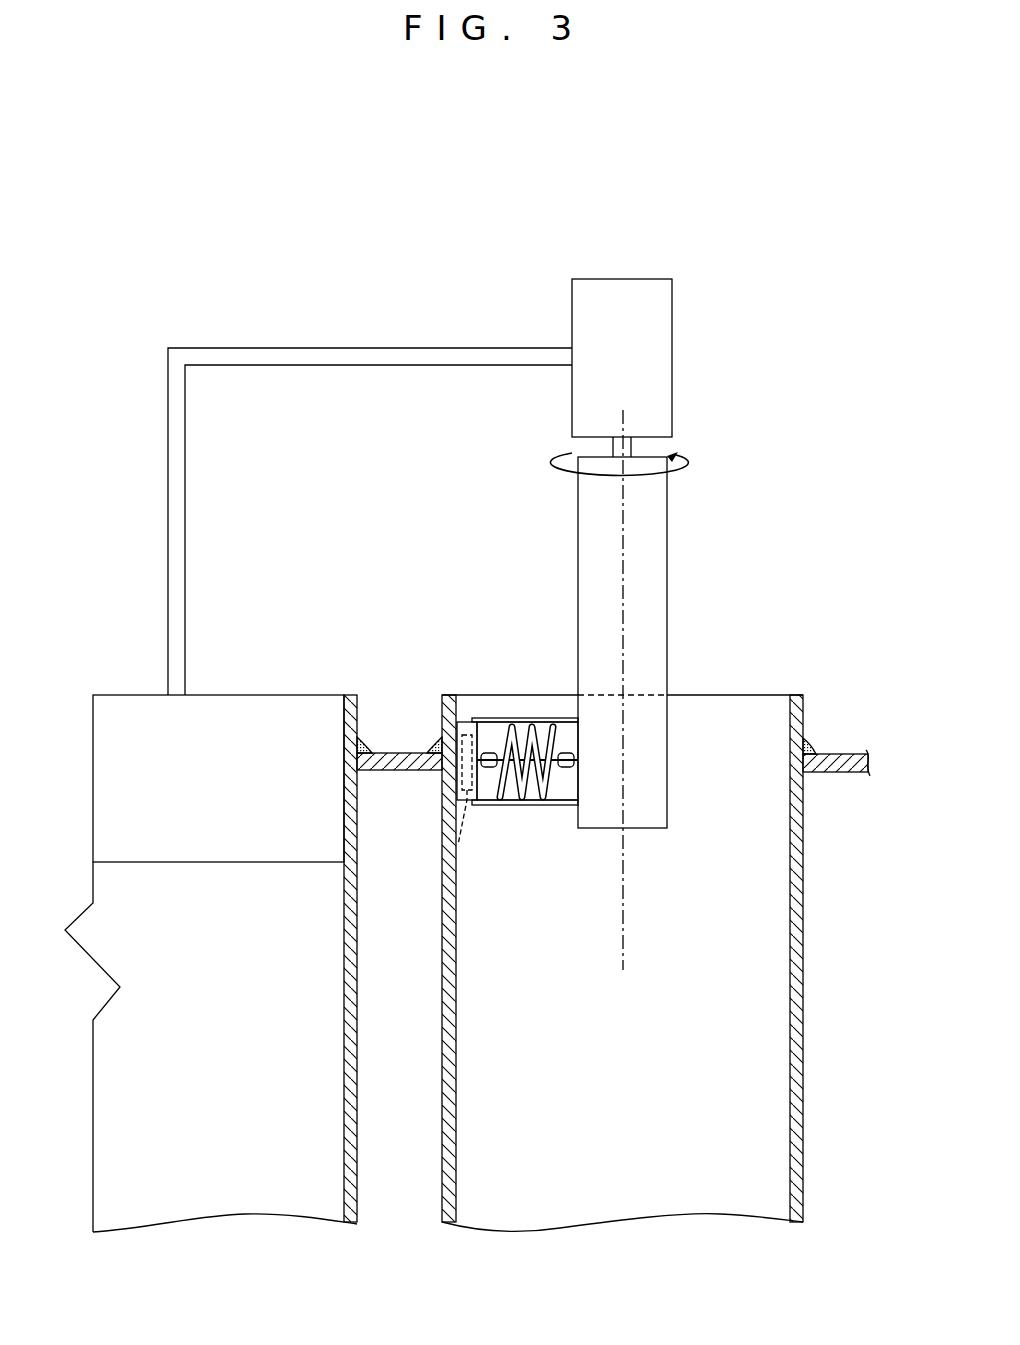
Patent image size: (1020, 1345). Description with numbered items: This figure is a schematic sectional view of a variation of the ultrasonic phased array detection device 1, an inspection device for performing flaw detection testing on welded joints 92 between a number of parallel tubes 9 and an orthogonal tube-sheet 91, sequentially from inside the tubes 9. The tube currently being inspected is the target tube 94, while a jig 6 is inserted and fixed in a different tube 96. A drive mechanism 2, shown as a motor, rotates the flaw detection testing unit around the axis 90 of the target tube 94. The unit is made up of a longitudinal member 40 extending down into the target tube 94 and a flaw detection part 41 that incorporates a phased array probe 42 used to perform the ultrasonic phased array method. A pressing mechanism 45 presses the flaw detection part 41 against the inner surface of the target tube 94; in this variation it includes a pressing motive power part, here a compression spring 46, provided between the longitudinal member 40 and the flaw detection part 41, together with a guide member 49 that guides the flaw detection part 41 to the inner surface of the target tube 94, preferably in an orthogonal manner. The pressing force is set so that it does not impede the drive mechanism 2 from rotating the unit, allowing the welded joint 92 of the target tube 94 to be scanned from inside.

The ultrasonic phased array detection device 1 is at (810, 164).
The drive mechanism 2 is at (619, 273).
The jig 6 is at (181, 868).
The tubes 9 is at (434, 987).
The longitudinal member 40 is at (650, 585).
The flaw detection part 41 is at (466, 698).
The phased array probe 42 is at (448, 853).
The pressing mechanism 45 is at (496, 732).
The compression spring 46 is at (535, 801).
The guide member 49 is at (522, 718).
The axis 90 is at (623, 903).
The tube-sheet 91 is at (397, 771).
The welded joints 92 is at (362, 742).
The target tube 94 is at (622, 1193).
The tube 96 is at (232, 1192).